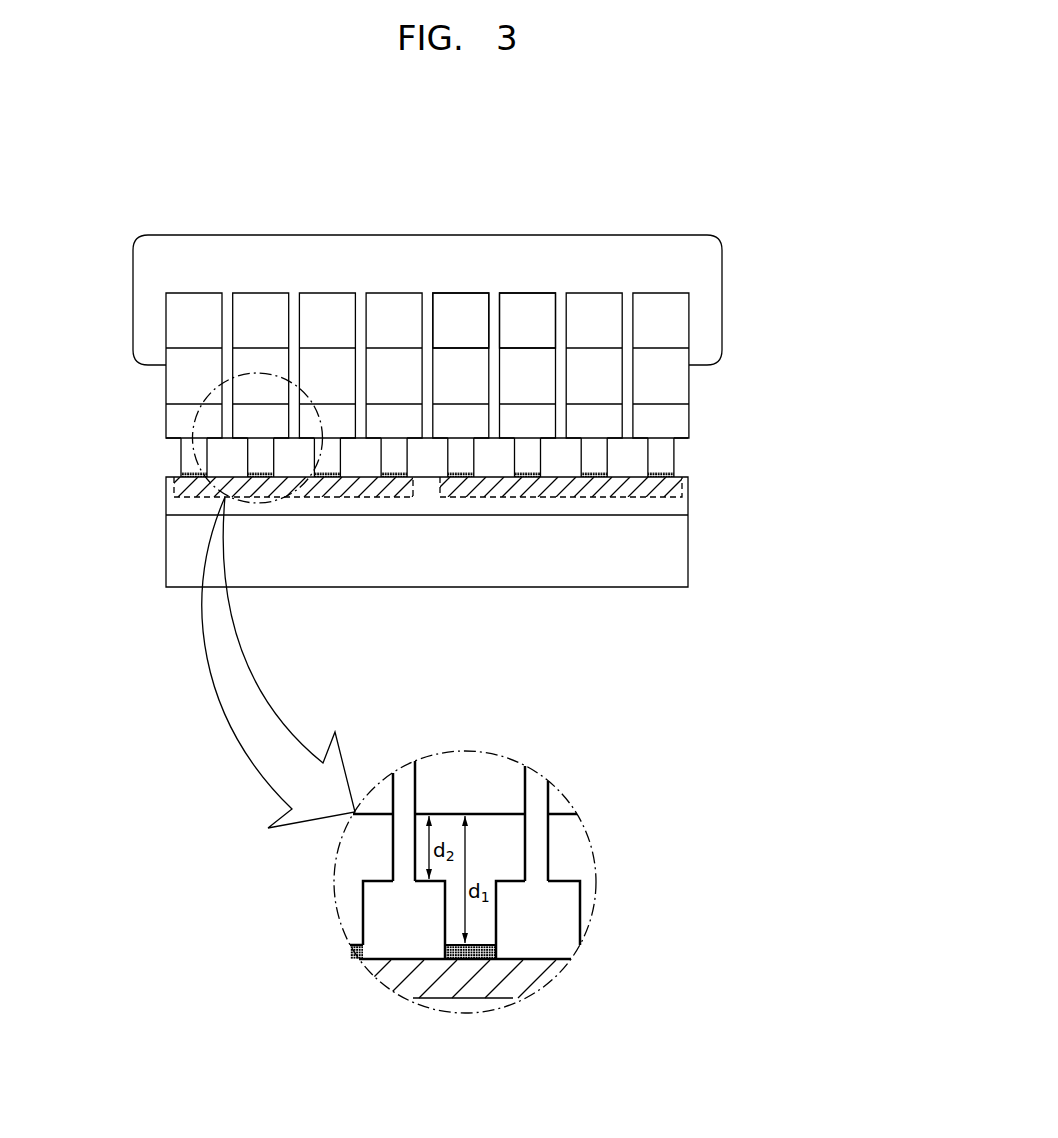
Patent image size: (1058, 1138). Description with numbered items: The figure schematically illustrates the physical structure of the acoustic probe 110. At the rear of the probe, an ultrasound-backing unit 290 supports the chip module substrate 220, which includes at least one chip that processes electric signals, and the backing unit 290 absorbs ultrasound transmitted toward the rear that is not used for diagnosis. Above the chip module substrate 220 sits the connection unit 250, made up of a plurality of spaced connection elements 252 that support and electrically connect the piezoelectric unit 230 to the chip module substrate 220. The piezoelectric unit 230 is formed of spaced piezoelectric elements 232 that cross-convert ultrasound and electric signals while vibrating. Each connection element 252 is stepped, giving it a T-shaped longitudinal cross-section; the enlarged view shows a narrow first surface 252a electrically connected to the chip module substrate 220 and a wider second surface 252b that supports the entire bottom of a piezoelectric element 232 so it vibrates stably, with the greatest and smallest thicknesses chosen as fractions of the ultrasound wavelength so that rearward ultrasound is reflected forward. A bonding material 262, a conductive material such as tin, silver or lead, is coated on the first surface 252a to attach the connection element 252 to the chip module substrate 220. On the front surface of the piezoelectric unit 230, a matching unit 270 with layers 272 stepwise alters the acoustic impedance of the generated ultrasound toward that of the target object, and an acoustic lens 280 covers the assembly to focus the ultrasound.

The acoustic probe 110 is at (730, 180).
The acoustic lens 280 is at (707, 312).
The piezoelectric unit 230 is at (793, 376).
The piezoelectric element 232 is at (678, 383).
The matching unit 270 is at (545, 178).
The matching unit layer 272 is at (462, 307).
The connection unit 250 is at (545, 640).
The connection element 252 is at (462, 478).
The first surface 252a is at (480, 945).
The second surface 252b is at (490, 812).
The chip module substrate 220 is at (668, 503).
The ultrasound-backing unit 290 is at (677, 542).
The bonding material 262 is at (472, 957).